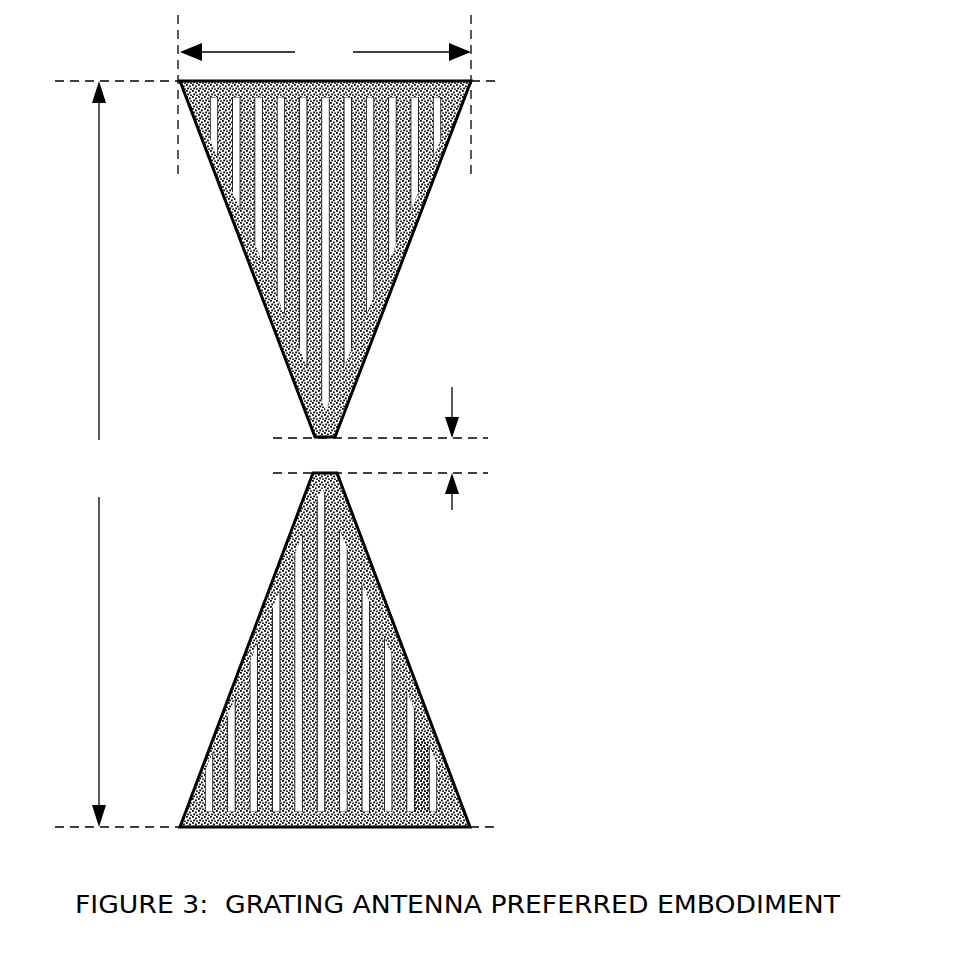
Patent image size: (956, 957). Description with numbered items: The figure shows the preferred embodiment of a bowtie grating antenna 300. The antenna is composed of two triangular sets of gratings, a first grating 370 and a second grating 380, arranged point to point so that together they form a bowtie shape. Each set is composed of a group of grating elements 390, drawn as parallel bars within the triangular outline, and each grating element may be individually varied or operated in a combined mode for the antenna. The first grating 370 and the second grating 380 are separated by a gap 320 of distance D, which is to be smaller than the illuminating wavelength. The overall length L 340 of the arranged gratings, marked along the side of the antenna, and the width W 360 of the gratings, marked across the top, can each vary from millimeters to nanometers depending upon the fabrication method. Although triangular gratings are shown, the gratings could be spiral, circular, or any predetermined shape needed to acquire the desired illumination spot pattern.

The bowtie grating antenna 300 is at (484, 454).
The gap 320 is at (464, 455).
The length L 340 is at (108, 463).
The width W 360 is at (321, 46).
The first grating 370 is at (418, 203).
The second grating 380 is at (407, 665).
The grating element 390 is at (415, 752).